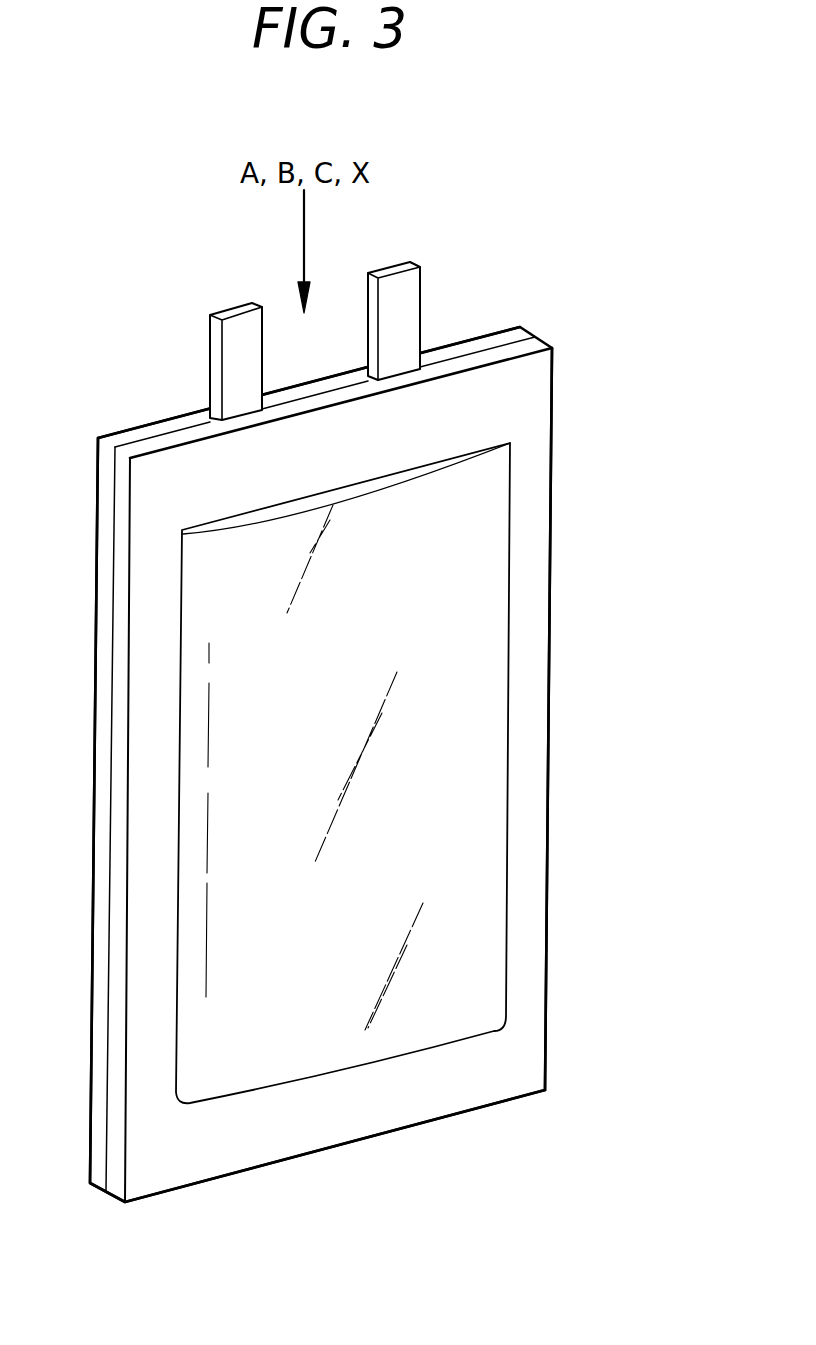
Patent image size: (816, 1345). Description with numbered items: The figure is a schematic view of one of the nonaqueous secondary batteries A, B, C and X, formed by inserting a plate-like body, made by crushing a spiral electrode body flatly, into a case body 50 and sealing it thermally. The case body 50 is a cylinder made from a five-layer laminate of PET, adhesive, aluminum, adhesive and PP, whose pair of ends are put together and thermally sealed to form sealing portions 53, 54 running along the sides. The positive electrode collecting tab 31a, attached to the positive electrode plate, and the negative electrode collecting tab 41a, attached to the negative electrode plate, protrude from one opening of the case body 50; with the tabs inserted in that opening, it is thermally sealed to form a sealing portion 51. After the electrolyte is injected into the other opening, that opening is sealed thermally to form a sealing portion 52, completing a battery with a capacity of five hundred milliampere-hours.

The positive electrode collecting tab 31a is at (242, 355).
The negative electrode collecting tab 41a is at (397, 310).
The case body 50 is at (452, 603).
The sealing portion 51 is at (167, 480).
The sealing portion 52 is at (397, 1103).
The sealing portion 53 is at (143, 782).
The sealing portion 54 is at (525, 717).